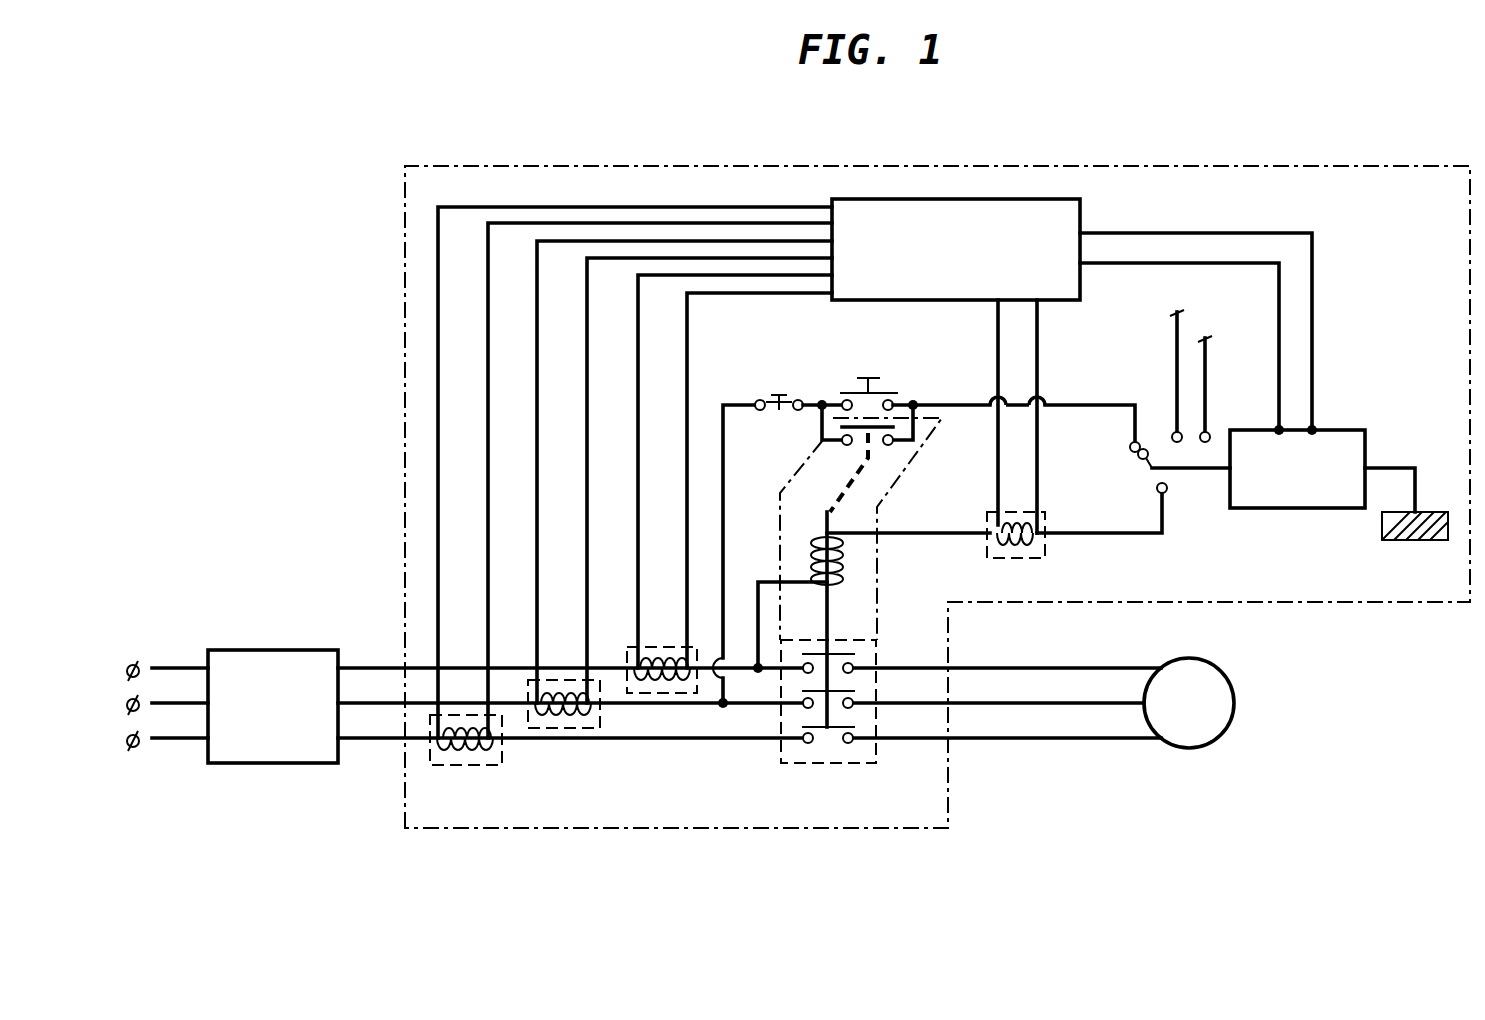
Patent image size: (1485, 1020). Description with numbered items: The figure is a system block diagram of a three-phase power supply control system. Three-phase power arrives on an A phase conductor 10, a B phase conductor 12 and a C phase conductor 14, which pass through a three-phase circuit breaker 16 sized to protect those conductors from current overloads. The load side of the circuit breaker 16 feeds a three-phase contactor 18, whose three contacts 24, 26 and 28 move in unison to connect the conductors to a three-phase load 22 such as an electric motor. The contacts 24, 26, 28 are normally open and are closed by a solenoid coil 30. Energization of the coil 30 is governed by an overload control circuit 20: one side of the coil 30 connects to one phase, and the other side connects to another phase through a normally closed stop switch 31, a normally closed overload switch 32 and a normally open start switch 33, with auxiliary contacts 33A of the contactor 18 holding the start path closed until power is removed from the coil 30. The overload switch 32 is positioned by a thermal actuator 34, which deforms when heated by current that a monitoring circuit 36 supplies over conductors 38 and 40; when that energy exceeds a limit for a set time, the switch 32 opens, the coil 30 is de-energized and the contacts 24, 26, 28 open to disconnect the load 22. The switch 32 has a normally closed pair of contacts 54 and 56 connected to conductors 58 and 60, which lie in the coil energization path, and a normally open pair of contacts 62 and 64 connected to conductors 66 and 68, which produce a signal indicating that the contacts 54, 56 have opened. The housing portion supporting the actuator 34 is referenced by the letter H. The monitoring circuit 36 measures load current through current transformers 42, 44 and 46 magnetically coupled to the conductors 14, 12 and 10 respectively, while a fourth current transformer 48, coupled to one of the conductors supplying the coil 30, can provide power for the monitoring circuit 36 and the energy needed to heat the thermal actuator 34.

The A phase conductor 10 is at (190, 668).
The B phase conductor 12 is at (160, 703).
The C phase conductor 14 is at (170, 742).
The three-phase circuit breaker 16 is at (297, 650).
The three-phase contactor 18 is at (830, 763).
The overload control circuit 20 is at (1410, 603).
The three-phase load 22 is at (1235, 692).
The contact 24 is at (852, 727).
The contact 26 is at (852, 690).
The contact 28 is at (1156, 490).
The solenoid coil 30 is at (816, 545).
The stop switch 31 is at (776, 376).
The overload switch 32 is at (1024, 577).
The start switch 33 is at (882, 388).
The auxiliary contacts 33A is at (891, 450).
The thermal actuator 34 is at (1348, 408).
The monitoring circuit 36 is at (1080, 205).
The conductor 38 is at (1312, 269).
The conductor 40 is at (1312, 320).
The current transformer 42 is at (478, 765).
The current transformer 44 is at (575, 730).
The current transformer 46 is at (663, 647).
The fourth current transformer 48 is at (1015, 510).
The contact 54 is at (1130, 448).
The contact 56 is at (1138, 458).
The conductor 58 is at (1090, 402).
The conductor 60 is at (1090, 535).
The contact 62 is at (1180, 426).
The contact 64 is at (1207, 434).
The conductor 66 is at (1176, 340).
The conductor 68 is at (1208, 344).
The housing portion H is at (1382, 531).